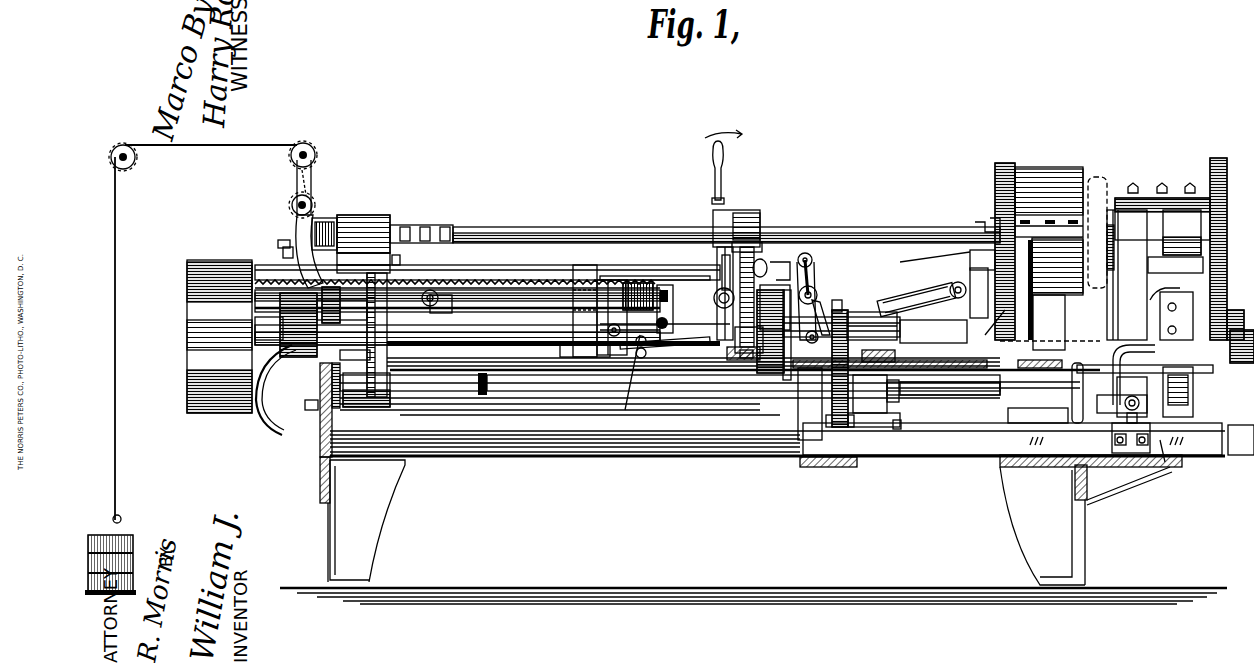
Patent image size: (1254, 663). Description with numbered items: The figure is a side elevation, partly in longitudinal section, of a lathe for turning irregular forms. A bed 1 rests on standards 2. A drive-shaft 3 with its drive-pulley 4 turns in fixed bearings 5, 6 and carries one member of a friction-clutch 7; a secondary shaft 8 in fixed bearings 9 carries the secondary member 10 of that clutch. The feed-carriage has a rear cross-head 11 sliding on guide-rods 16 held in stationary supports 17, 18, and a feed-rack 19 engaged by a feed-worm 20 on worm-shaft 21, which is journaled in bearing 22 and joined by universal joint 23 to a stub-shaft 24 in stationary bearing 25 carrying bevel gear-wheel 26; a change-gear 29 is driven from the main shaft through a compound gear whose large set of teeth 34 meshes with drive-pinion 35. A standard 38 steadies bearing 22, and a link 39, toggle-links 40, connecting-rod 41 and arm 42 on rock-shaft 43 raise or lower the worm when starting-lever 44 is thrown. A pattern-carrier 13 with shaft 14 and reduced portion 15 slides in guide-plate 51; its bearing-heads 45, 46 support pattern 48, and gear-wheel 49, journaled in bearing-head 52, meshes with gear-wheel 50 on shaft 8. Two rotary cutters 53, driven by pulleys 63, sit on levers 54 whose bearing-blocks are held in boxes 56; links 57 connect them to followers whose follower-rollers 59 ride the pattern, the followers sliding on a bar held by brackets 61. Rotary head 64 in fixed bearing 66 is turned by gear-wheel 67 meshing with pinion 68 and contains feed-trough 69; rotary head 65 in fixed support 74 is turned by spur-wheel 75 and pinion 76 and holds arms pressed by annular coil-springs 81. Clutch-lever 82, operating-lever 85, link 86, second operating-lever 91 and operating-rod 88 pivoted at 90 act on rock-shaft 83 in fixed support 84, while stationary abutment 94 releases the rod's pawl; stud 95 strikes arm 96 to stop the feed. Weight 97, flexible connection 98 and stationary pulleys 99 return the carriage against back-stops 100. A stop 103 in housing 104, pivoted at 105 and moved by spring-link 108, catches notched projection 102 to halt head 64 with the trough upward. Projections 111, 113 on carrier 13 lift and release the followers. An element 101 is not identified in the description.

The bed 1 is at (578, 448).
The standards 2 is at (380, 504).
The drive-shaft 3 is at (533, 346).
The drive-pulley 4 is at (203, 318).
The fixed bearing 5 is at (284, 311).
The fixed bearing 6 is at (768, 318).
The friction-clutch 7 is at (812, 370).
The secondary shaft 8 is at (874, 324).
The fixed bearings 9 is at (868, 320).
The secondary member of friction-clutch 10 is at (800, 375).
The rear cross-head 11 is at (392, 200).
The pattern-carrier 13 is at (1013, 427).
The shaft 14 is at (584, 395).
The reduced portion 15 is at (445, 396).
The guide-rods 16 is at (598, 227).
The stationary support 17 is at (297, 250).
The stationary support 18 is at (760, 212).
The feed-rack 19 is at (548, 280).
The feed-worm 20 is at (673, 300).
The worm-shaft 21 is at (496, 312).
The bearing 22 is at (660, 282).
The universal joint 23 is at (434, 290).
The stub-shaft 24 is at (402, 343).
The stationary bearing 25 is at (378, 292).
The bevel gear-wheel 26 is at (350, 323).
The change-gear 29 is at (283, 252).
The large set of teeth 34 is at (300, 395).
The drive-pinion 35 is at (292, 365).
The standard 38 is at (628, 296).
The link 39 is at (631, 379).
The toggle-links 40 is at (648, 350).
The connecting-rod 41 is at (700, 350).
The arm 42 is at (668, 323).
The rock-shaft 43 is at (715, 288).
The starting-lever 44 is at (724, 190).
The bearing-head 45 is at (874, 401).
The bearing-head 46 is at (1193, 405).
The pattern 48 is at (962, 400).
The gear-wheel 49 is at (830, 427).
The gear-wheel 50 is at (843, 301).
The guide-plate 51 is at (1028, 439).
The bearing-head 52 is at (826, 368).
The rotary cutters 53 is at (1108, 182).
The levers 54 is at (1127, 275).
The boxes 56 is at (1228, 368).
The links 57 is at (1112, 430).
The follower-roller 59 is at (1145, 375).
The brackets 61 is at (1097, 400).
The pulleys 63 is at (1182, 232).
The rotary head 64 is at (1049, 193).
The rotary head 65 is at (1162, 203).
The fixed bearing 66 is at (1055, 294).
The gear-wheel 67 is at (995, 182).
The pinion 68 is at (1008, 368).
The feed-trough 69 is at (932, 263).
The fixed support 74 is at (1175, 278).
The spur-wheel 75 is at (1219, 158).
The pinion 76 is at (1240, 298).
The annular coil-springs 81 is at (764, 263).
The clutch-lever 82 is at (804, 332).
The rock-shaft 83 is at (818, 290).
The fixed support 84 is at (826, 300).
The operating-lever 85 is at (812, 272).
The link 86 is at (785, 276).
The operating-rod 88 is at (660, 276).
The pivotal connection 90 is at (808, 253).
The second operating-lever 91 is at (814, 262).
The stationary abutment 94 is at (438, 313).
The stud 95 is at (400, 260).
The arm 96 is at (722, 262).
The weight 97 is at (127, 535).
The flexible connection 98 is at (117, 270).
The stationary pulleys 99 is at (133, 165).
The back-stops 100 is at (340, 215).
The coupling 101 is at (415, 222).
The notched projection 102 is at (978, 214).
The stop 103 is at (970, 262).
The housing 104 is at (968, 312).
The pivotal connection 105 is at (962, 350).
The spring-link 108 is at (950, 287).
The projection 111 is at (900, 430).
The second projection 113 is at (1165, 462).